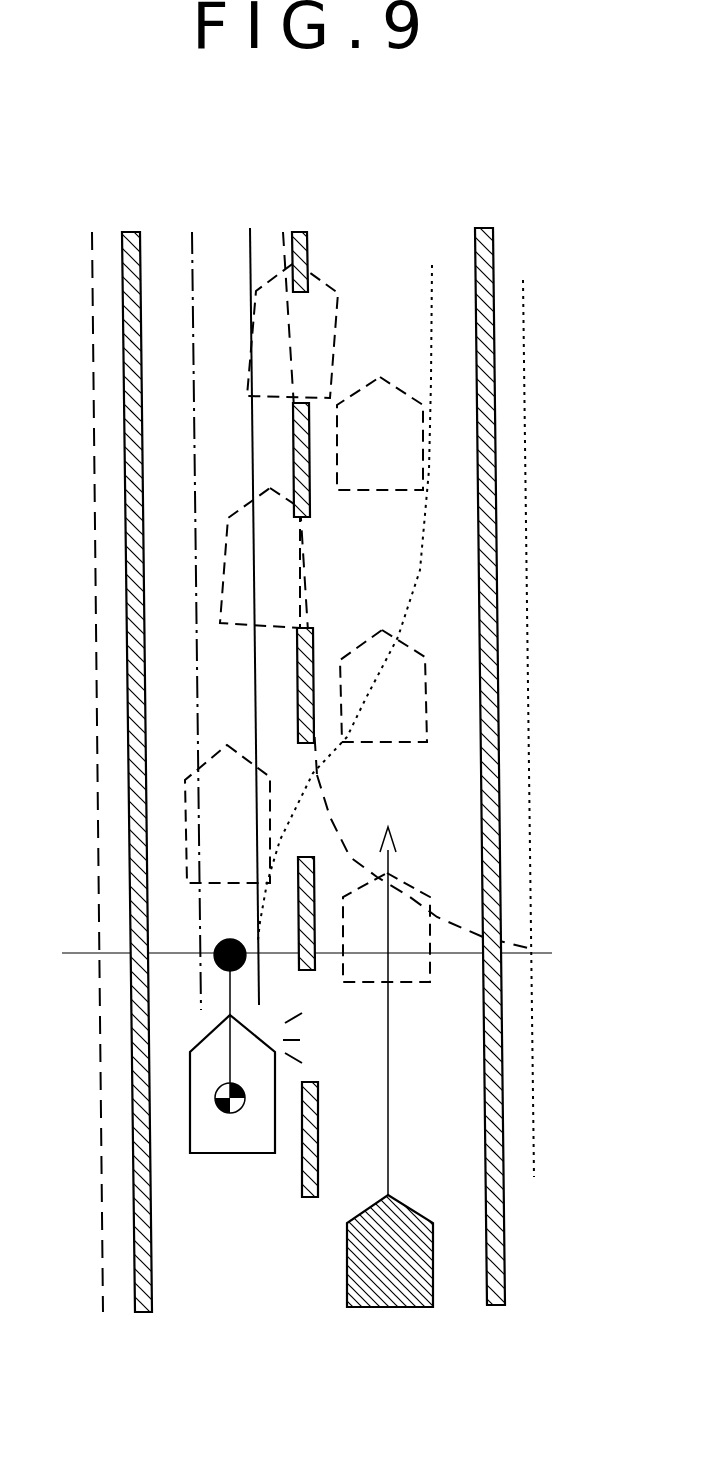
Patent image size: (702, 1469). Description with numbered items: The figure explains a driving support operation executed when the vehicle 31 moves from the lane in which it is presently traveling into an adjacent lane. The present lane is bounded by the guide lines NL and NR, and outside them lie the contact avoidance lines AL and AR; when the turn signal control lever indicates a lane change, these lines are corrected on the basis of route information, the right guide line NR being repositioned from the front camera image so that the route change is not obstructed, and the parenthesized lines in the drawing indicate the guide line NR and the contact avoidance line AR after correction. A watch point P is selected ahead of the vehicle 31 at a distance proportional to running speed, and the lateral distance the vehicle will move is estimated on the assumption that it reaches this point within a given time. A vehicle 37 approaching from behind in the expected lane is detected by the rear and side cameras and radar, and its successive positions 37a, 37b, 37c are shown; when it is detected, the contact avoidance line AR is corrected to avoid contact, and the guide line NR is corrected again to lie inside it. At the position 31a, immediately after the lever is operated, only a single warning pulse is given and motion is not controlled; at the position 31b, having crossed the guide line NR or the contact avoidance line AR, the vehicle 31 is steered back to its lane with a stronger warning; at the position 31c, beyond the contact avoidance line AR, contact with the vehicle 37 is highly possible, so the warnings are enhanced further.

The vehicle 31 is at (238, 1157).
The position of the vehicle 31a is at (227, 747).
The position of the vehicle 31b is at (240, 512).
The position of the vehicle 31c is at (252, 350).
The vehicle approaching from behind 37 is at (417, 1207).
The other vehicle predicted position (first) 37a is at (410, 982).
The other vehicle predicted position (second) 37b is at (365, 642).
The other vehicle predicted position (third) 37c is at (383, 378).
The front watch point P is at (226, 936).
The contact avoidance line AL is at (92, 232).
The guide line NL is at (192, 232).
The right guide line NR is at (250, 228).
The contact avoidance line AR is at (283, 232).